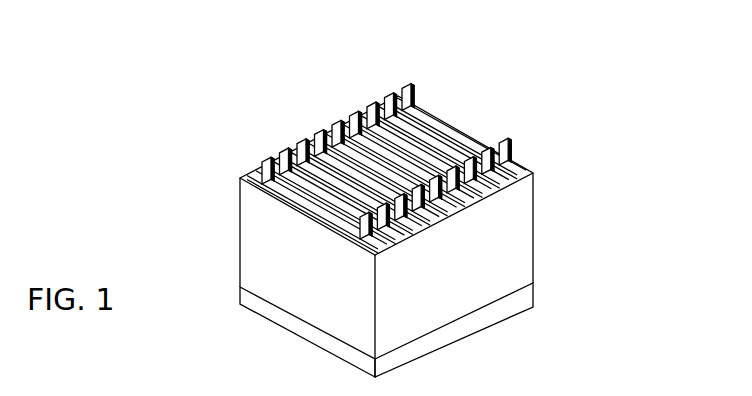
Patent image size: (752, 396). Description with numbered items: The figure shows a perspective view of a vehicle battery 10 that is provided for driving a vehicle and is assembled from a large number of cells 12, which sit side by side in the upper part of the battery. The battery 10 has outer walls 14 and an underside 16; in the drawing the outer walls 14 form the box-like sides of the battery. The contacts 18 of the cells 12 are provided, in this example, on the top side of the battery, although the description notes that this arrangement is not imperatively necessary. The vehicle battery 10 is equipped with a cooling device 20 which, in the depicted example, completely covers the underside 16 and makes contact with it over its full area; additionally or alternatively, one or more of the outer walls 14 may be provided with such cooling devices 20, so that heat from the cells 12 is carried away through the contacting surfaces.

The vehicle battery 10 is at (426, 191).
The cell 12 is at (446, 130).
The outer wall 14 is at (518, 237).
The underside 16 is at (518, 297).
The contact 18 is at (409, 88).
The cooling device 20 is at (253, 313).